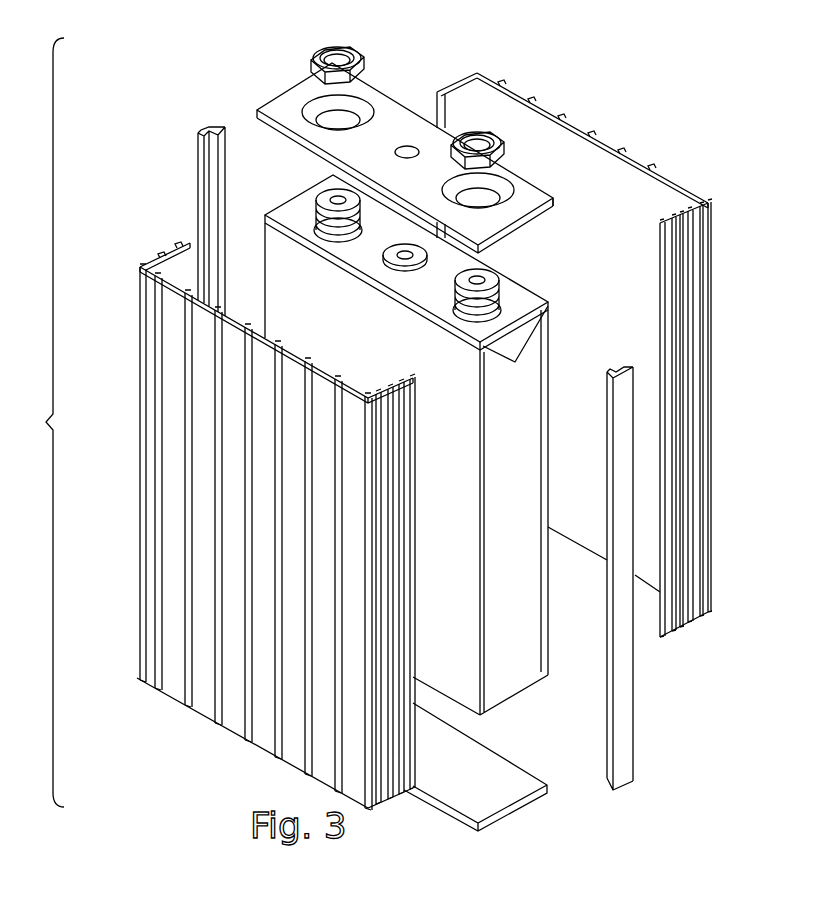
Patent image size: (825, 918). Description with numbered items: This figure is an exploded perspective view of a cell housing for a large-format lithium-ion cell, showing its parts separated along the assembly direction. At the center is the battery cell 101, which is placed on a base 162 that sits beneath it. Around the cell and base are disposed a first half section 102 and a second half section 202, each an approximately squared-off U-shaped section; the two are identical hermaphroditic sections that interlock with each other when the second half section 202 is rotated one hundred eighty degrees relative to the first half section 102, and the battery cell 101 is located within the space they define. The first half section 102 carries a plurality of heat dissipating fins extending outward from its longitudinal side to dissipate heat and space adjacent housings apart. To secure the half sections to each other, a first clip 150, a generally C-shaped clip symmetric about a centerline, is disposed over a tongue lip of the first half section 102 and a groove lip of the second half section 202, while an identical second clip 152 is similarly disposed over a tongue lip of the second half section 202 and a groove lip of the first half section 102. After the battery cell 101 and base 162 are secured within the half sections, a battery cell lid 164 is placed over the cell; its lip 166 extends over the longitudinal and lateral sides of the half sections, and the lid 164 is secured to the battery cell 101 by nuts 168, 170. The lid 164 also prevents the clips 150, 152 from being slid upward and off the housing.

The battery cell 101 is at (395, 344).
The first half section 102 is at (150, 528).
The first clip 150 is at (632, 690).
The second clip 152 is at (197, 183).
The base 162 is at (527, 770).
The battery cell lid 164 is at (282, 106).
The lip 166 is at (556, 204).
The nut 168 is at (497, 132).
The nut 170 is at (363, 72).
The second half section 202 is at (697, 403).